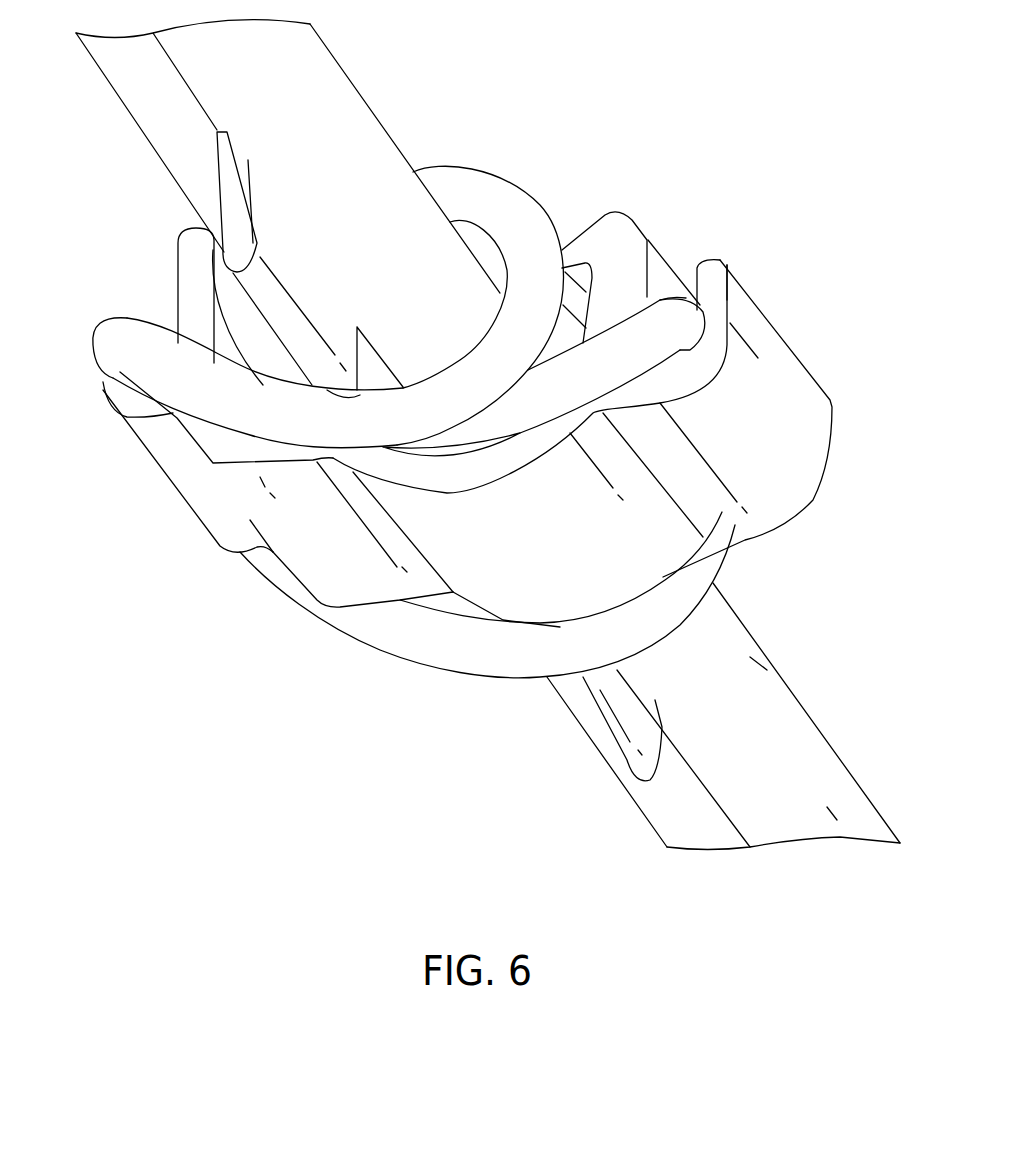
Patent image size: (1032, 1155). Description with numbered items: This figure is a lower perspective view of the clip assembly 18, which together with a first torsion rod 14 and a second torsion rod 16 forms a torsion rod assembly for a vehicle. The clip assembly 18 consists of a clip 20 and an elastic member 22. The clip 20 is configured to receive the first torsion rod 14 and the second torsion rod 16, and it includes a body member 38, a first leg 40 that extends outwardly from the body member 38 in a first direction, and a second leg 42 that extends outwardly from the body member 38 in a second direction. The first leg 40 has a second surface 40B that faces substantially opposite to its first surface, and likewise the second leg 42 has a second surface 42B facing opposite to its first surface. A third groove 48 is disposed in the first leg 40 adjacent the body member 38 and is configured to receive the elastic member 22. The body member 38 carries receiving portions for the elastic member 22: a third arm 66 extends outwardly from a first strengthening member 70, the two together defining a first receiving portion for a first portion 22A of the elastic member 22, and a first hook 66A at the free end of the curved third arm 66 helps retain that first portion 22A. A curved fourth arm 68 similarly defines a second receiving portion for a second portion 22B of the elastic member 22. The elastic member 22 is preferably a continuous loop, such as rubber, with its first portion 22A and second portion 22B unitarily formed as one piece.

The first torsion rod 14 is at (340, 70).
The second torsion rod 16 is at (130, 112).
The clip assembly 18 is at (699, 128).
The clip 20 is at (793, 330).
The elastic member 22 is at (405, 665).
The first portion of the elastic member 22A is at (696, 296).
The second portion of the elastic member 22B is at (100, 374).
The body member 38 is at (195, 525).
The first leg 40 is at (212, 175).
The second surface of the first leg 40B is at (293, 260).
The second leg 42 is at (648, 790).
The second surface of the second leg 42B is at (625, 705).
The third groove 48 is at (370, 358).
The third arm 66 is at (818, 368).
The first hook 66A is at (703, 260).
The fourth arm 68 is at (160, 465).
The first strengthening member 70 is at (607, 216).